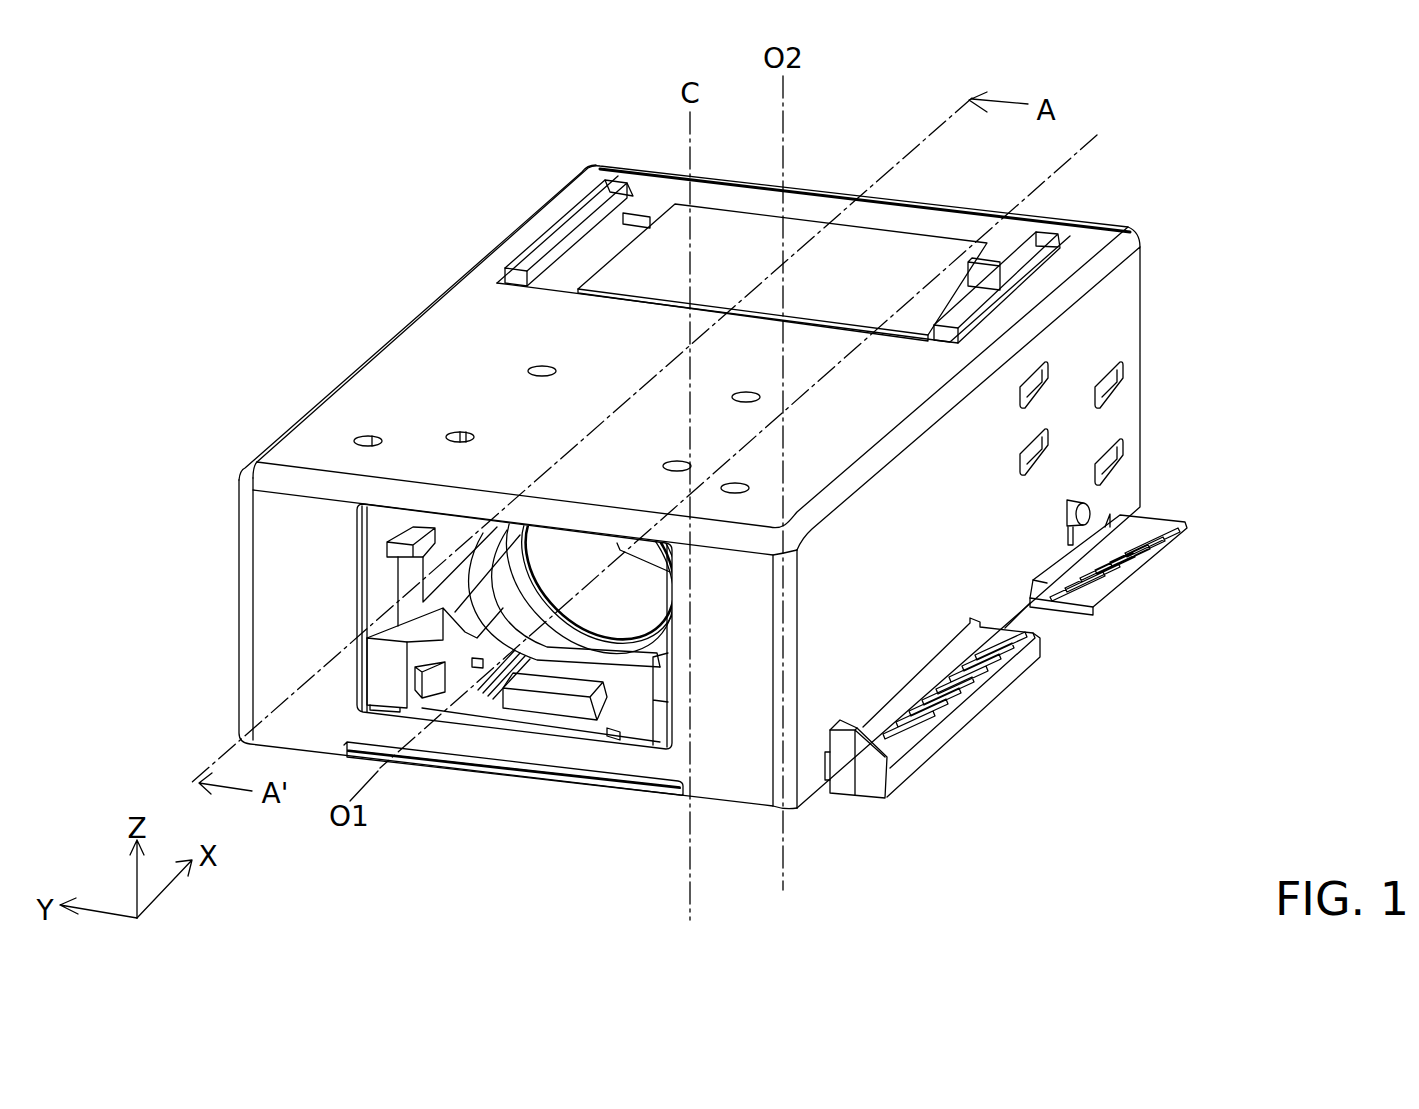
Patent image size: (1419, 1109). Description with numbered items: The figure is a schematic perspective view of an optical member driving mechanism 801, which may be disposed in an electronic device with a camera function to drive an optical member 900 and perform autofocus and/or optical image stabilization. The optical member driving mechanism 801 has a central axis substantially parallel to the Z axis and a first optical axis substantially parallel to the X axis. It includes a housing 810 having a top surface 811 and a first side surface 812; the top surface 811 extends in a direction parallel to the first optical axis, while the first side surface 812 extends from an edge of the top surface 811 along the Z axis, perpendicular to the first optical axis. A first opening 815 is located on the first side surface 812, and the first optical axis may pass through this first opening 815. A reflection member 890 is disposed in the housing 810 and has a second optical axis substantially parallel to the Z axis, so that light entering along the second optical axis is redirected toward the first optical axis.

The optical member driving mechanism 801 is at (291, 58).
The housing 810 is at (517, 229).
The top surface 811 is at (448, 372).
The first side surface 812 is at (723, 693).
The first opening 815 is at (533, 727).
The reflection member 890 is at (917, 267).
The optical member 900 is at (563, 571).